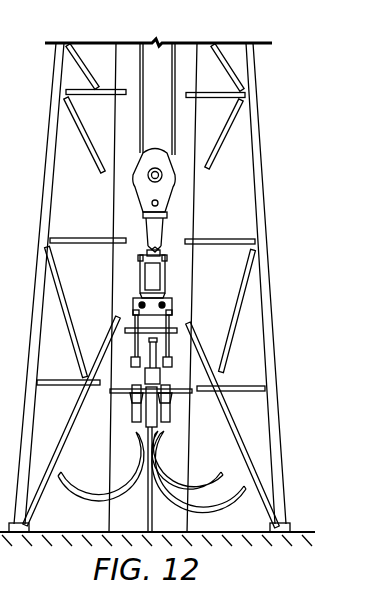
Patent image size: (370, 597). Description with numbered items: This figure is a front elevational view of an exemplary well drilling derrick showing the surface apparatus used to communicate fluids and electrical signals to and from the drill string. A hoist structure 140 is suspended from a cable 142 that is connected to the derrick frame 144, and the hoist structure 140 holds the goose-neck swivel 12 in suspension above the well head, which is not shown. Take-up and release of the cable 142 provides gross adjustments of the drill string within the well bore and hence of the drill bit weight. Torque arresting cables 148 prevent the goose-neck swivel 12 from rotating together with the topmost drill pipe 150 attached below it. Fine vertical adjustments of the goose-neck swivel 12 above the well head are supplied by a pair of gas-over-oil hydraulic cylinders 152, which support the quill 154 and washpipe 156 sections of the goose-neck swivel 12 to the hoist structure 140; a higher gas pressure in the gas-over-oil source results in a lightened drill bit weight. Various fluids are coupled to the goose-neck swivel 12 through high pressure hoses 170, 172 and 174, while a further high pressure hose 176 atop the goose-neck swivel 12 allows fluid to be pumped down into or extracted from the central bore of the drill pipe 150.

The goose-neck swivel 12 is at (151, 349).
The hoist structure 140 is at (182, 219).
The cable 142 is at (176, 55).
The derrick frame 144 is at (256, 147).
The torque arresting cables 148 is at (114, 268).
The drill pipe 150 is at (149, 522).
The gas-over-oil hydraulic cylinders 152 is at (129, 438).
The quill 154 is at (118, 413).
The washpipe 156 is at (158, 381).
The high pressure hose 170 is at (84, 499).
The high pressure hose 172 is at (204, 483).
The high pressure hose 174 is at (214, 507).
The high pressure hose 176 is at (158, 340).